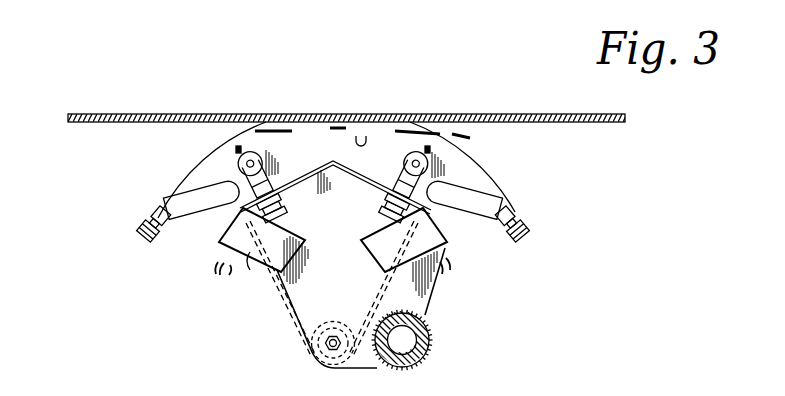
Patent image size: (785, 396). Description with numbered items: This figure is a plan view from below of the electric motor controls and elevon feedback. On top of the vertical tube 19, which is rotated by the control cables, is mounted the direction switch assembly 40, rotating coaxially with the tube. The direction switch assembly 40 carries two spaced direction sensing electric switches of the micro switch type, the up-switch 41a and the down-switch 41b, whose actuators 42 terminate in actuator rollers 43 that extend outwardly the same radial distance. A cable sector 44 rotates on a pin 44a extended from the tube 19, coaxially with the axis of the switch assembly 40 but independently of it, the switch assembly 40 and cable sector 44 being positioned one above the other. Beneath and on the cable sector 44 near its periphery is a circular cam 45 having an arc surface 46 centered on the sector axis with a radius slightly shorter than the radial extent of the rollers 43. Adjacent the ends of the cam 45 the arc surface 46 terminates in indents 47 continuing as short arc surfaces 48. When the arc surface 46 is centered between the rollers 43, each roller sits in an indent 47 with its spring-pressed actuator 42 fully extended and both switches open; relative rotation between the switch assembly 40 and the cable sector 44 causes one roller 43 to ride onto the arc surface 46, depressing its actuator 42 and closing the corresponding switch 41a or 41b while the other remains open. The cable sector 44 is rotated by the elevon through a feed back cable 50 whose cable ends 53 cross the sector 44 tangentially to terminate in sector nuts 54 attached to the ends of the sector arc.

The vertical tube 19 is at (424, 359).
The direction switch assembly 40 is at (345, 294).
The up-switch 41a is at (442, 238).
The down-switch 41b is at (280, 273).
The actuator 42 is at (240, 196).
The actuator roller 43 is at (238, 165).
The cable sector 44 is at (336, 170).
The pin 44a is at (311, 356).
The circular cam 45 is at (333, 127).
The arc surface 46 is at (364, 140).
The indent 47 is at (249, 151).
The short arc surface 48 is at (240, 150).
The feed back cable 50 is at (123, 115).
The cable end 53 is at (156, 214).
The sector nut 54 is at (138, 231).